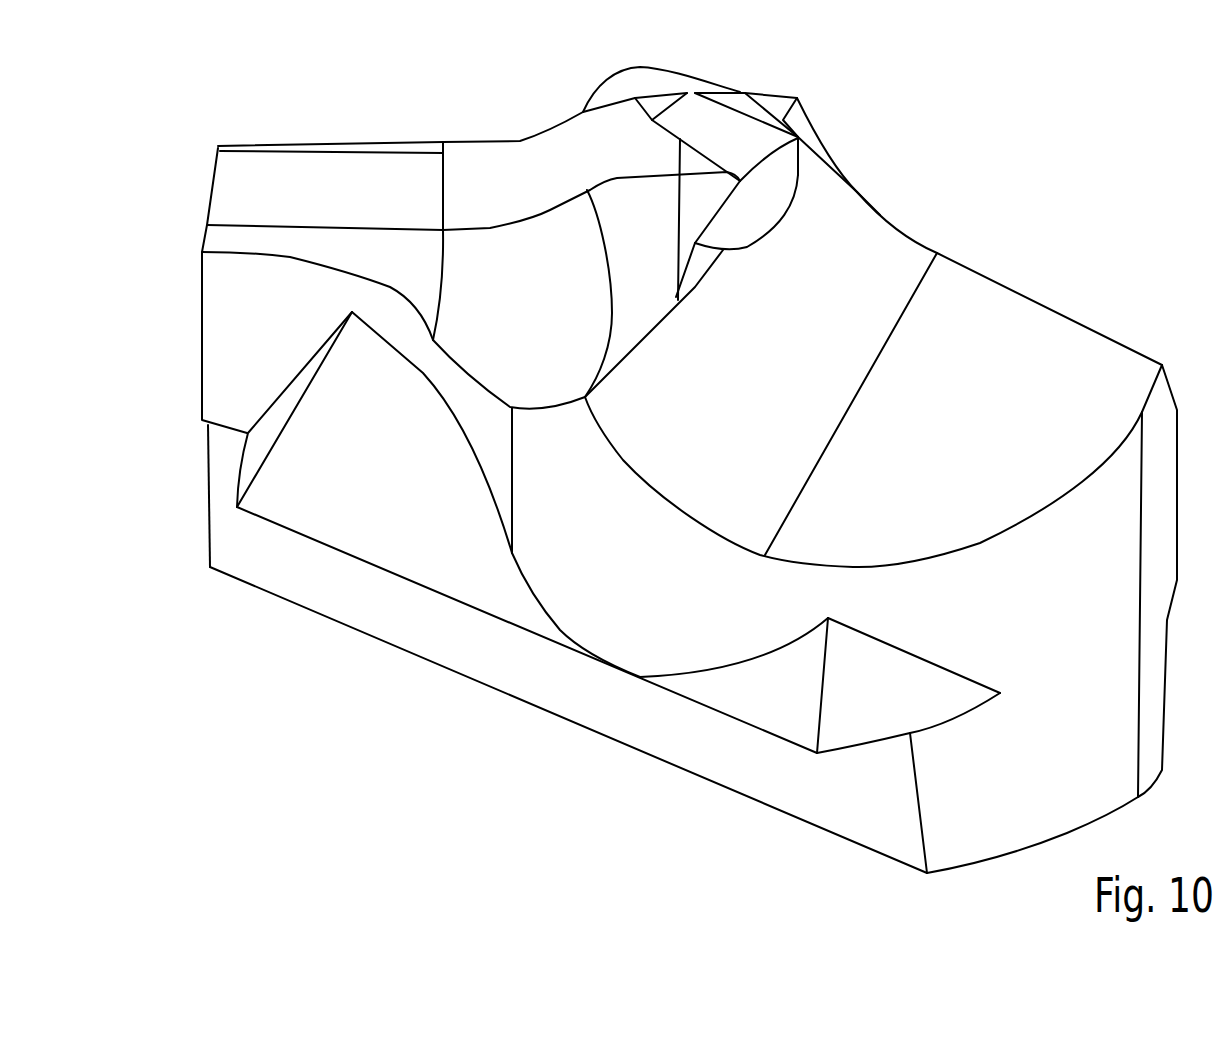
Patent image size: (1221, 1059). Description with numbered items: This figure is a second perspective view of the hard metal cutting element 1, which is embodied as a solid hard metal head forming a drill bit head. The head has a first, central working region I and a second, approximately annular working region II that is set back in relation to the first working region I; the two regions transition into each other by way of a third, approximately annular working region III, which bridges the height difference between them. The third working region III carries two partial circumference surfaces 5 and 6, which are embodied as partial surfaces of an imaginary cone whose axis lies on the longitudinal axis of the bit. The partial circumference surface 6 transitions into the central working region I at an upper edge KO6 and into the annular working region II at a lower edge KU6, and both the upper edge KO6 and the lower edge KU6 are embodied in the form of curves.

The hard metal cutting element 1 is at (952, 130).
The partial circumference surface 5 is at (607, 82).
The partial circumference surface 6 is at (856, 149).
The first, central working region I is at (747, 87).
The second, approximately annular working region II is at (985, 320).
The third, approximately annular working region III is at (835, 140).
The upper edge KO6 is at (805, 140).
The lower edge KU6 is at (762, 240).